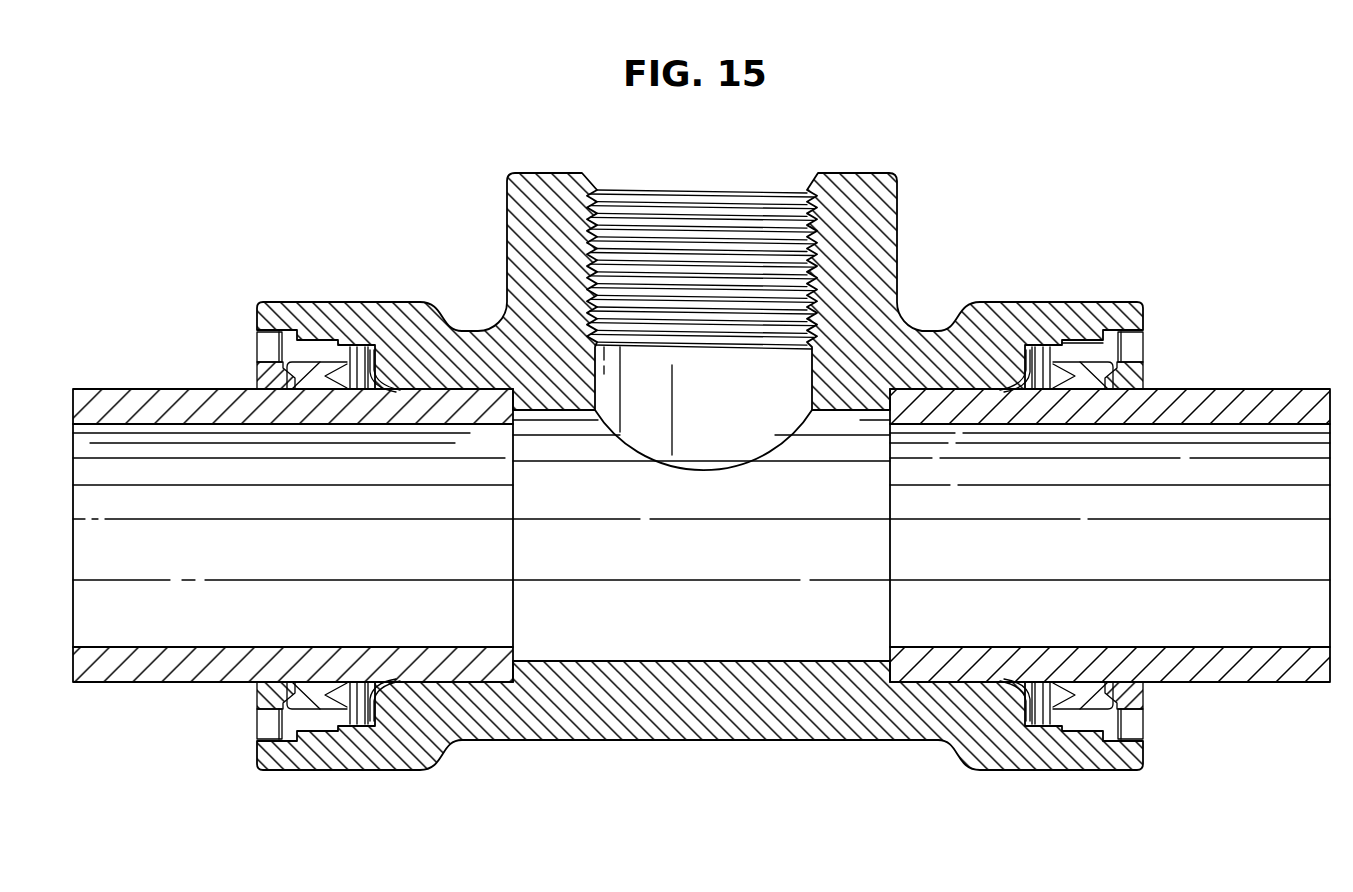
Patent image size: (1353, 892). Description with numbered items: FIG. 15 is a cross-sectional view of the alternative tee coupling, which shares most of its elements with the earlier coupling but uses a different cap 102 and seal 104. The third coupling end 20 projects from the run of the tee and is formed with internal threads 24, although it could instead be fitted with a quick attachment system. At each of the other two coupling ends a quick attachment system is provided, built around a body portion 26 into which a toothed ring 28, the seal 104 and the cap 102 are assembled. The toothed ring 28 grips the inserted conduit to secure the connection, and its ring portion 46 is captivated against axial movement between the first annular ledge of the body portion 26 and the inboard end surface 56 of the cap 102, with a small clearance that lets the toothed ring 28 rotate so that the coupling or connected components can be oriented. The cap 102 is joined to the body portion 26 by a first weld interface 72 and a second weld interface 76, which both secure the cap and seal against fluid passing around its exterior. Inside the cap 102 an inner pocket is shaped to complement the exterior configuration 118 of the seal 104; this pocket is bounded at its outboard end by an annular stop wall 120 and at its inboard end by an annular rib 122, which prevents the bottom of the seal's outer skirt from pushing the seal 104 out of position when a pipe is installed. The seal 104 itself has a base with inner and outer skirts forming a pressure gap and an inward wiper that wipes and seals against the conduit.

The third coupling end 20 is at (872, 187).
The internal threads 24 is at (770, 188).
The body portion 26 is at (1065, 370).
The toothed ring 28 is at (1018, 713).
The ring portion 46 is at (1037, 727).
The inboard end surface 56 is at (1027, 390).
The first weld interface 72 is at (1087, 342).
The second weld interface 76 is at (1100, 337).
The cap 102 is at (1147, 723).
The seal 104 is at (1093, 712).
The exterior configuration 118 is at (1056, 352).
The annular stop wall 120 is at (1123, 400).
The annular rib 122 is at (1047, 385).